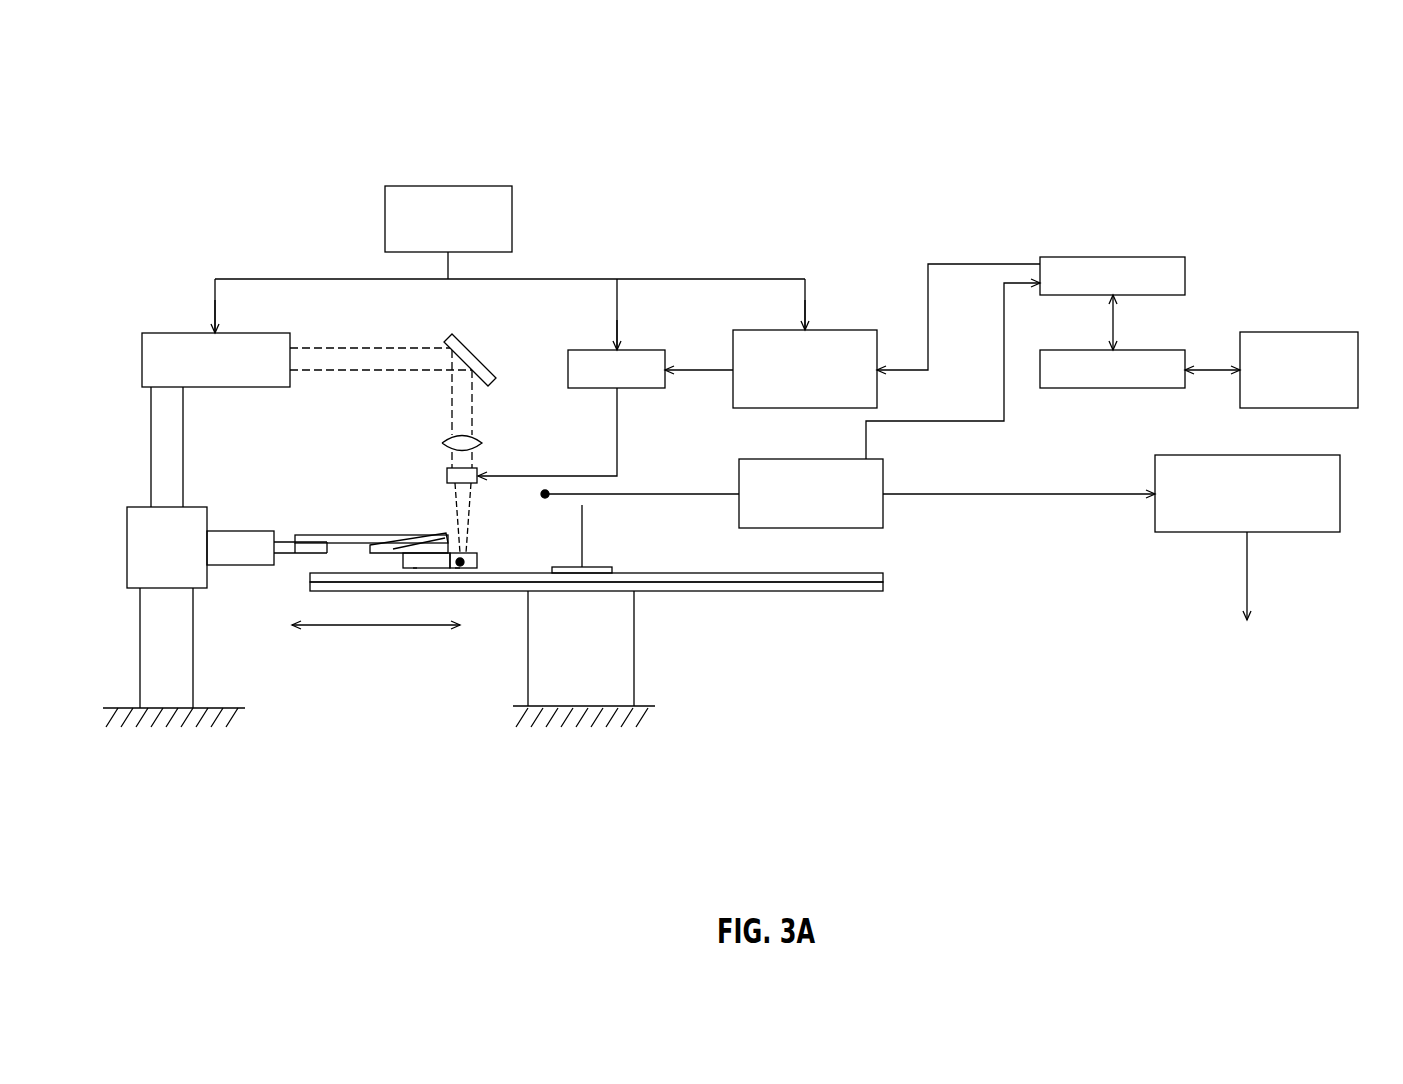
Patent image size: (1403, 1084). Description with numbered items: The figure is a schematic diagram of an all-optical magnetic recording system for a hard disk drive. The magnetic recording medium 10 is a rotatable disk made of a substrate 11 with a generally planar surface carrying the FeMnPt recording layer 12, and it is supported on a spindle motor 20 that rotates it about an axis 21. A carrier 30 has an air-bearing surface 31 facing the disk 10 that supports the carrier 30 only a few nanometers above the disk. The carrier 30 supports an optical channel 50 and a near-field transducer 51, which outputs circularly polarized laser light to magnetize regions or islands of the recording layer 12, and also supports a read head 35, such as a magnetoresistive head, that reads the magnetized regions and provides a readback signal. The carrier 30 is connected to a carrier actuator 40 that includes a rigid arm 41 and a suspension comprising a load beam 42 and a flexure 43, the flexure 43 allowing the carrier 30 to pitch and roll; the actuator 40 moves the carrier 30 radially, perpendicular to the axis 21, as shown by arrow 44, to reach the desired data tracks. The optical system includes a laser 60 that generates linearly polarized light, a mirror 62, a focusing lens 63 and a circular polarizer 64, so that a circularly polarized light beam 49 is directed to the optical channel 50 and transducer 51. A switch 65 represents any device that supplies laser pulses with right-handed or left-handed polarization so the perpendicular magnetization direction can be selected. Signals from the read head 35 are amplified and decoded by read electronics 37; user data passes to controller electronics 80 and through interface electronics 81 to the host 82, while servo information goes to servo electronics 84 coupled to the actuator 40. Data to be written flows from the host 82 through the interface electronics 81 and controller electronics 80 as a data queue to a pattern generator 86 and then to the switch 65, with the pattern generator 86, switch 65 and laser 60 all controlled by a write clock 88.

The magnetic recording medium 10 is at (629, 585).
The substrate 11 is at (864, 592).
The FeMnPt recording layer 12 is at (864, 574).
The spindle motor 20 is at (634, 648).
The axis 21 is at (582, 556).
The carrier 30 is at (403, 560).
The air-bearing surface 31 is at (415, 568).
The read head 35 is at (458, 569).
The read electronics 37 is at (771, 459).
The carrier actuator 40 is at (138, 507).
The rigid arm 41 is at (290, 540).
The load beam 42 is at (370, 545).
The flexure 43 is at (432, 534).
The arrow 44 is at (348, 628).
The circularly polarized light beam 49 is at (463, 528).
The optical channel 50 is at (470, 550).
The near-field transducer 51 is at (473, 564).
The laser 60 is at (167, 333).
The mirror 62 is at (478, 352).
The focusing lens 63 is at (480, 446).
The circular polarizer 64 is at (479, 470).
The switch 65 is at (640, 350).
The controller electronics 80 is at (1147, 257).
The interface electronics 81 is at (1147, 350).
The host 82 is at (1344, 332).
The servo electronics 84 is at (1331, 455).
The pattern generator 86 is at (856, 330).
The write clock 88 is at (395, 186).